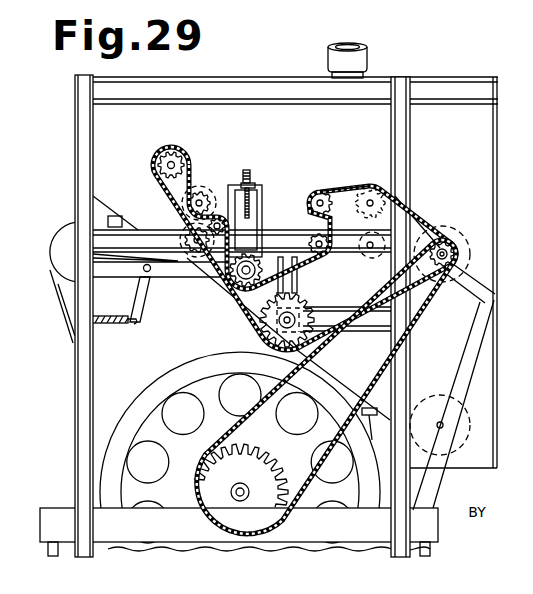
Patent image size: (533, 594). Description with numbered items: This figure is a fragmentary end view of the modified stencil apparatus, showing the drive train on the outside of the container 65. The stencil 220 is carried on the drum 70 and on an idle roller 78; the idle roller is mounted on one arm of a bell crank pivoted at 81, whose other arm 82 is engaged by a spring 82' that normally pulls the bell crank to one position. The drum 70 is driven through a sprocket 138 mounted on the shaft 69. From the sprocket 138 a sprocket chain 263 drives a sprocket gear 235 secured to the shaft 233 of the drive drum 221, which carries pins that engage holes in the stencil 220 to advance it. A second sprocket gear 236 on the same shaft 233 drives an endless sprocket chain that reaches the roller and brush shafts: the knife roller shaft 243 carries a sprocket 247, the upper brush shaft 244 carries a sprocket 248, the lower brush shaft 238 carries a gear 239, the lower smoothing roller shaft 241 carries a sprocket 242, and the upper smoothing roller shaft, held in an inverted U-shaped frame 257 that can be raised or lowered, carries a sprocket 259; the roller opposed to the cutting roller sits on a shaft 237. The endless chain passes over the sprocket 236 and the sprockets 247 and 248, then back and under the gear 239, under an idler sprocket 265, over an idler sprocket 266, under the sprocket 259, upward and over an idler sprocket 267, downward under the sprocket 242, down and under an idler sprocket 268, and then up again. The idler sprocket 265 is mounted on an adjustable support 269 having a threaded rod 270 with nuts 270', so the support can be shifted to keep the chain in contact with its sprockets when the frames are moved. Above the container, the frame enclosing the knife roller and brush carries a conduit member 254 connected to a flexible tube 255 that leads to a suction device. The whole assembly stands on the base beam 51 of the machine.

The base beam 51 is at (56, 507).
The container 65 is at (97, 143).
The shaft 69 is at (243, 486).
The drum 70 is at (145, 396).
The idle roller 78 is at (62, 230).
The pivot 81 is at (145, 271).
The arm 82 is at (127, 299).
The spring 82' is at (114, 330).
The sprocket 138 is at (273, 467).
The stencil 220 is at (61, 302).
The drive drum 221 is at (470, 262).
The shaft 233 is at (447, 243).
The sprocket gear 235 is at (445, 267).
The sprocket gear 236 is at (440, 290).
The shaft 237 is at (364, 256).
The shaft 238 is at (358, 232).
The gear 239 is at (322, 255).
The shaft 241 is at (190, 241).
The sprocket 242 is at (200, 262).
The shaft 243 is at (370, 187).
The shaft 244 is at (320, 190).
The sprocket 247 is at (405, 202).
The sprocket 248 is at (338, 191).
The conduit member 254 is at (332, 75).
The flexible tube 255 is at (368, 55).
The inverted U-shaped frame 257 is at (166, 197).
The sprocket 259 is at (201, 192).
The sprocket chain 263 is at (207, 447).
The idler sprocket 265 is at (235, 290).
The idler sprocket 266 is at (200, 223).
The idler sprocket 267 is at (170, 151).
The idler sprocket 268 is at (262, 332).
The adjustable support 269 is at (253, 228).
The threaded rod 270 is at (245, 166).
The nuts 270' is at (262, 189).